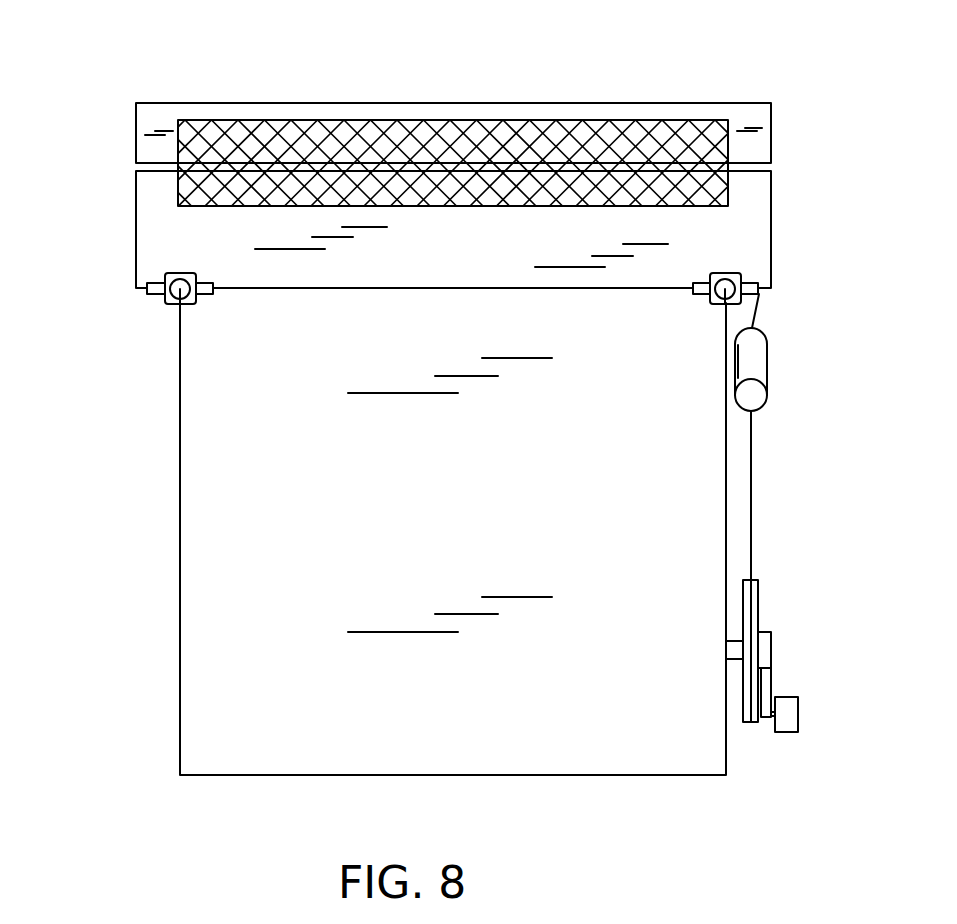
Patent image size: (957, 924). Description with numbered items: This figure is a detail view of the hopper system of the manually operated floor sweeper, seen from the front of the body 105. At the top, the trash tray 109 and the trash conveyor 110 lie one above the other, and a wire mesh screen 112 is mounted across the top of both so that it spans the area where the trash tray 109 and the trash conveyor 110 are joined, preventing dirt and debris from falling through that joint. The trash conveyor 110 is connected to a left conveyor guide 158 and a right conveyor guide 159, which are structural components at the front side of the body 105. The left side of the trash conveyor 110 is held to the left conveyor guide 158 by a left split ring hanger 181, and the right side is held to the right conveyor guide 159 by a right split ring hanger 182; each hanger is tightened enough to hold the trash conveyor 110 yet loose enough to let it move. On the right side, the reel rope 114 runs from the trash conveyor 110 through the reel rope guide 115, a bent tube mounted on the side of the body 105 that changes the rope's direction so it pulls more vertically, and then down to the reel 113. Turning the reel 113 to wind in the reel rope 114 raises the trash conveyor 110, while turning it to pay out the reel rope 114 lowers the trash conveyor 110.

The body 105 is at (618, 715).
The trash tray 109 is at (745, 112).
The trash conveyor 110 is at (760, 188).
The screen 112 is at (585, 130).
The reel 113 is at (757, 607).
The reel rope 114 is at (752, 490).
The reel rope guide 115 is at (768, 365).
The left conveyor guide 158 is at (178, 280).
The right conveyor guide 159 is at (727, 280).
The left split ring hanger 181 is at (164, 303).
The right split ring hanger 182 is at (757, 285).